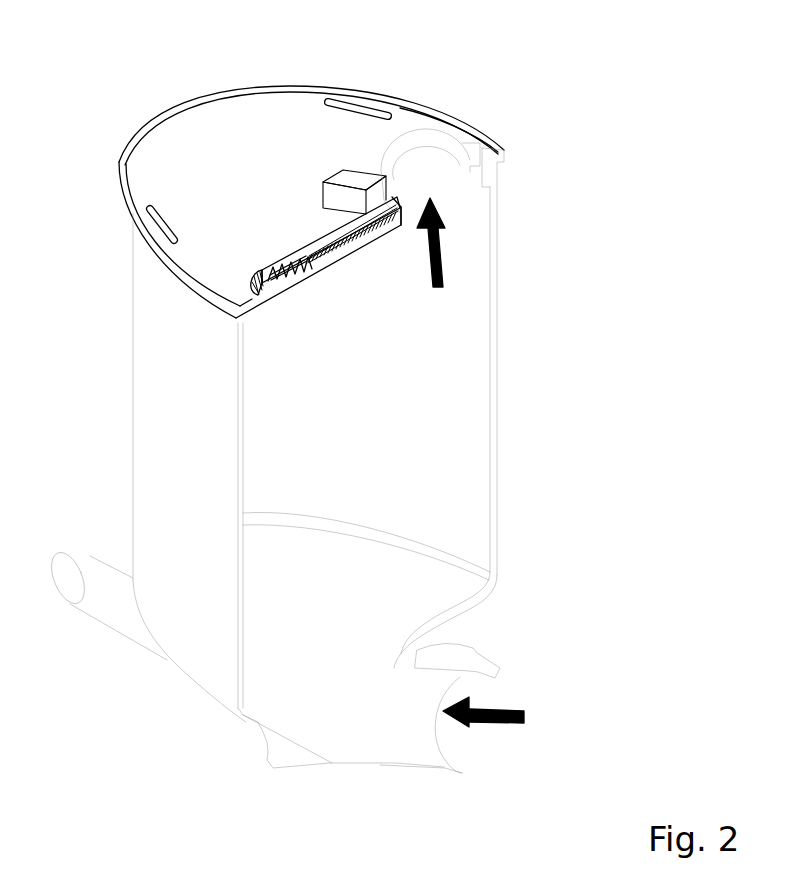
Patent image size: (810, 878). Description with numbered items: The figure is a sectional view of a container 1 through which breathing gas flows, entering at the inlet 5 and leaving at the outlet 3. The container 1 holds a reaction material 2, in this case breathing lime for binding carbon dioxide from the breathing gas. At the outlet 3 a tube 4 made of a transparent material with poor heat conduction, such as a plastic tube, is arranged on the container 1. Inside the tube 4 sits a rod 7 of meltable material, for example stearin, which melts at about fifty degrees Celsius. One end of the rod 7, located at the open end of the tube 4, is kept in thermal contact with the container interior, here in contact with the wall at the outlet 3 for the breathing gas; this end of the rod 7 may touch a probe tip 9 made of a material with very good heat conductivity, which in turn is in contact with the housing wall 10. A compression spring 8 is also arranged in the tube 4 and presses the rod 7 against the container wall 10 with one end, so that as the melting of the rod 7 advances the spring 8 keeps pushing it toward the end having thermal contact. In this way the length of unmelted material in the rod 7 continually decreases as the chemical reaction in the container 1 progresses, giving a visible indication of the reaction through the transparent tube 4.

The container 1 is at (493, 412).
The reaction material 2 is at (463, 324).
The outlet 3 is at (428, 180).
The tube 4 is at (330, 231).
The inlet 5 is at (524, 712).
The rod 7 is at (313, 252).
The compression spring 8 is at (272, 270).
The probe tip 9 is at (385, 203).
The housing wall 10 is at (396, 205).